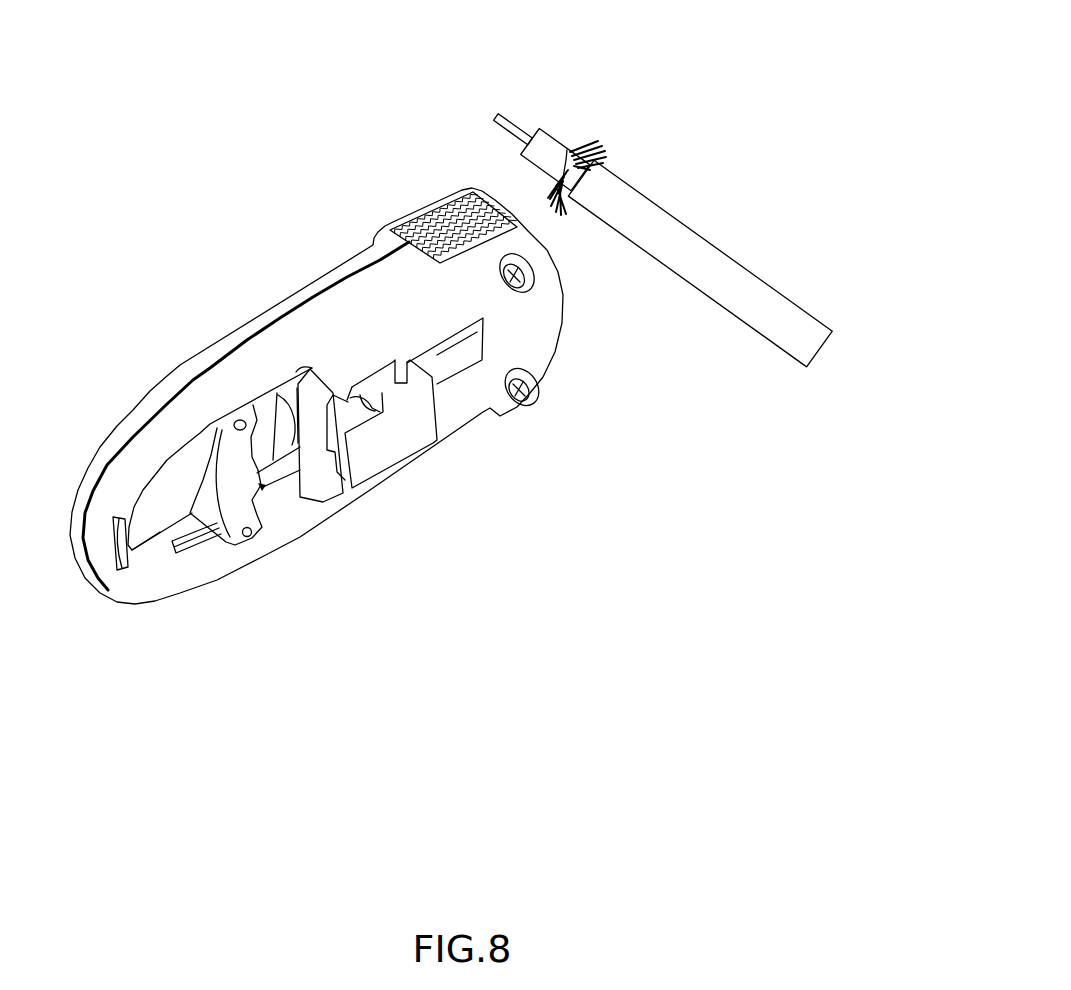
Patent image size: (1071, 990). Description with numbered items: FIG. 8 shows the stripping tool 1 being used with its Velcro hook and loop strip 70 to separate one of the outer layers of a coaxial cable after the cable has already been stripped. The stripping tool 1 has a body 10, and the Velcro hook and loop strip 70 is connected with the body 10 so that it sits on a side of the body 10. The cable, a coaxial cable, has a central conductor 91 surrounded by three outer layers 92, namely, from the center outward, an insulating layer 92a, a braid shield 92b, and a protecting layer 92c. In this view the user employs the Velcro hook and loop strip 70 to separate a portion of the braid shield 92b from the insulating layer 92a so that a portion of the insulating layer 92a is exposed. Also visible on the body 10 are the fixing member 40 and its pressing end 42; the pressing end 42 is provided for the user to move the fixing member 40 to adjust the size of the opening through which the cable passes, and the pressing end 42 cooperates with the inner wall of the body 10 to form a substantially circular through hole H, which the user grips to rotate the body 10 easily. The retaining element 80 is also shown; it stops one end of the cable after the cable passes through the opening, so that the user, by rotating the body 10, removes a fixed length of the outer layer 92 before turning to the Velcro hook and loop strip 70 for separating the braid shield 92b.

The stripping tool 1 is at (106, 366).
The body 10 is at (241, 327).
The Velcro hook and loop strip 70 is at (436, 212).
The fixing member 40 is at (285, 496).
The pressing end 42 is at (245, 505).
The retaining element 80 is at (400, 447).
The through hole H is at (150, 560).
The central conductor 91 is at (495, 136).
The outer layer 92 is at (634, 12).
The insulating layer 92a is at (545, 133).
The braid shield 92b is at (594, 147).
The protecting layer 92c is at (657, 196).